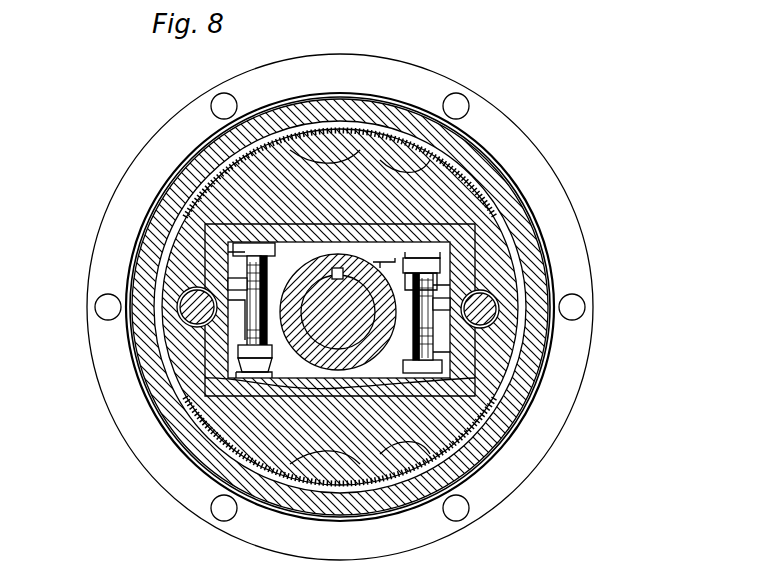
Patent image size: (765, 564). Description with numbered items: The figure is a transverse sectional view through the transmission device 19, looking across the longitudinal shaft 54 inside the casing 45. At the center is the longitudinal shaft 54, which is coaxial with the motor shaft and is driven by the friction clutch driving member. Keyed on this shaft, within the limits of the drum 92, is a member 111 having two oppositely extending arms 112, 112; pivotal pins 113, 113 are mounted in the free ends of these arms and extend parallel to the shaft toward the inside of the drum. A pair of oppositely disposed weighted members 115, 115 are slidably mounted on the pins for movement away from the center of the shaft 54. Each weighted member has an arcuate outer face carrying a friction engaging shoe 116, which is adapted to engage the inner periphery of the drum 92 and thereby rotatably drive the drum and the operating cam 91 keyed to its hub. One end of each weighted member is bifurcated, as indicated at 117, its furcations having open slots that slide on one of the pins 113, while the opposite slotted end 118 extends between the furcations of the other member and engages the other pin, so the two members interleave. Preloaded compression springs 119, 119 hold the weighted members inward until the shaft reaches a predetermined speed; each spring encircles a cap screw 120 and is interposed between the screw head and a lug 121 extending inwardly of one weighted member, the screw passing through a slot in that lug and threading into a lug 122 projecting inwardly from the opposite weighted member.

The transmission device 19 is at (146, 152).
The casing 45 is at (572, 216).
The longitudinal shaft 54 is at (318, 262).
The operating cam 91 is at (393, 172).
The drum 92 is at (462, 458).
The member 111 is at (372, 262).
The arms 112 is at (222, 267).
The pivotal pins 113 is at (236, 350).
The weighted members 115 is at (216, 410).
The friction engaging shoes 116 is at (145, 213).
The bifurcated end 117 is at (176, 303).
The slotted end 118 is at (224, 283).
The preloaded compression springs 119 is at (228, 252).
The cap screw 120 is at (236, 372).
The lug 121 is at (96, 297).
The lug 122 is at (224, 373).